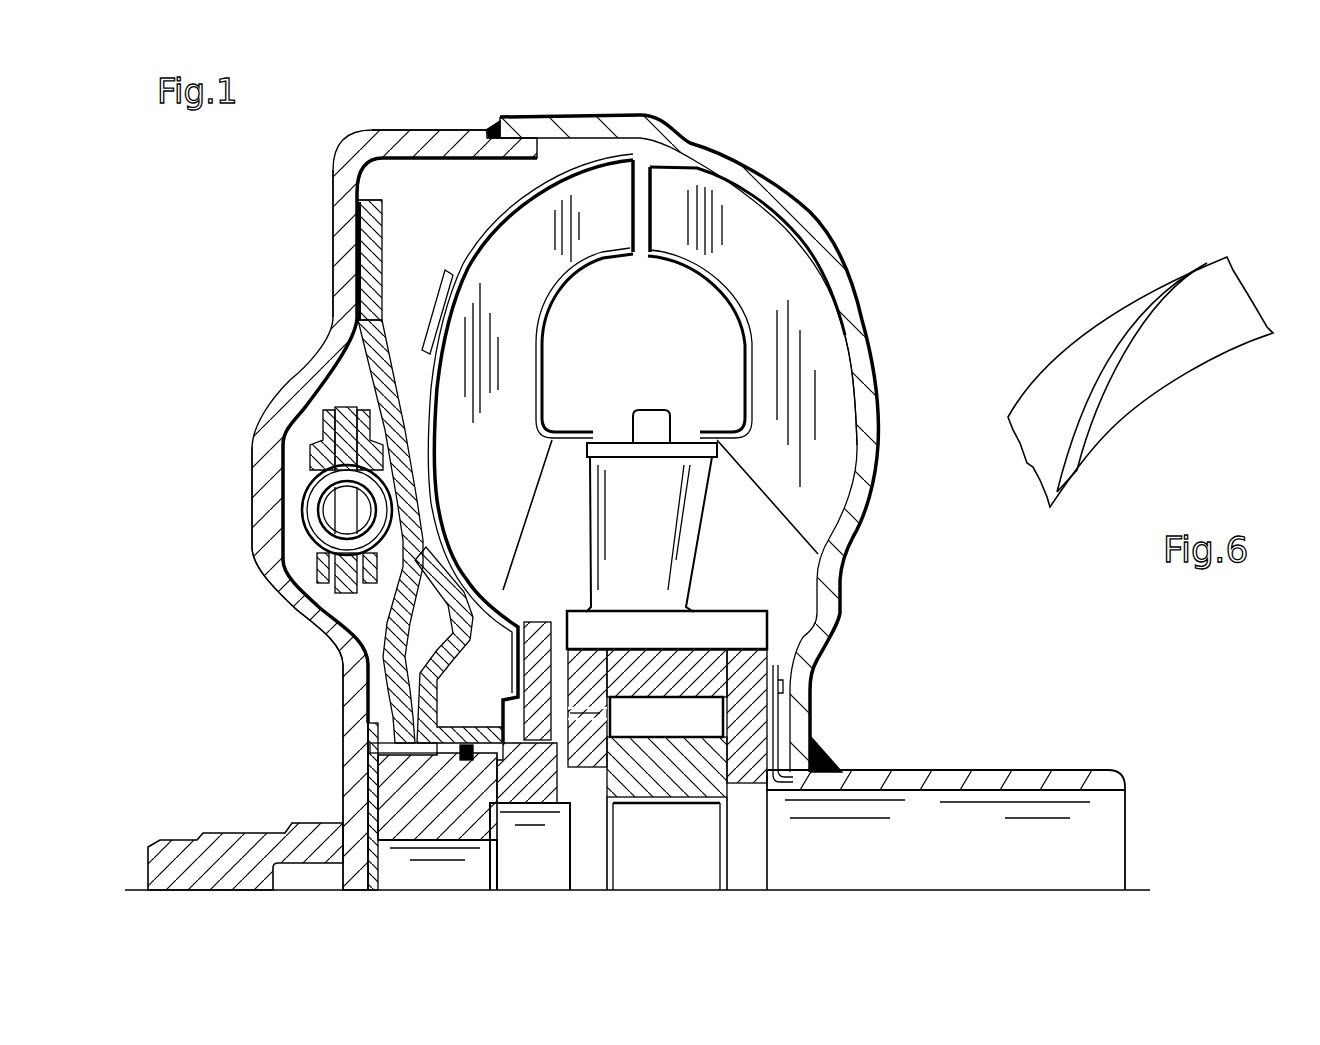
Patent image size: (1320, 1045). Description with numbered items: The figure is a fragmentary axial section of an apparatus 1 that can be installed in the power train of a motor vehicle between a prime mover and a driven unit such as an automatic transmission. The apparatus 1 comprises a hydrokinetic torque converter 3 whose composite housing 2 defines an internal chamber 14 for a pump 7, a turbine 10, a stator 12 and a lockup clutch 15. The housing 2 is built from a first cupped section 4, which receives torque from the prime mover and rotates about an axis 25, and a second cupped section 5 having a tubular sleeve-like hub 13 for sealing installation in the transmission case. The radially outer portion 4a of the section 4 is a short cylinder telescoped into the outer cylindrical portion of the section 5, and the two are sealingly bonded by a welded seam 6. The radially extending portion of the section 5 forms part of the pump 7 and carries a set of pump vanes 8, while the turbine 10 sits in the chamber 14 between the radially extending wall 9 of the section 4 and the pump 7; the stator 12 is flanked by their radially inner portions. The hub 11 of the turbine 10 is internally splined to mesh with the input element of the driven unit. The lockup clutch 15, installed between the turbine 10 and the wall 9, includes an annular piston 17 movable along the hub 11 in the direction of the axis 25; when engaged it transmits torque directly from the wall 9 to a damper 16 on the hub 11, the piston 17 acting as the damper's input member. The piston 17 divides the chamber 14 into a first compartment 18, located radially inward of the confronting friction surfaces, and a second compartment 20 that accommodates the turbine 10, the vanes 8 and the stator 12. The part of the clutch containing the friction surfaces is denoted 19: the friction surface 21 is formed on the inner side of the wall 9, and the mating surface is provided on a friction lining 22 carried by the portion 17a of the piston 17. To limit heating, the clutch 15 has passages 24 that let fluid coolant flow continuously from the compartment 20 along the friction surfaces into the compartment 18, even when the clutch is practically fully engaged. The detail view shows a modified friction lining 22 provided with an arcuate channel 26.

In FIG. 1, the apparatus 1 is at (867, 257).
In FIG. 1, the composite housing 2 is at (390, 147).
In FIG. 1, the hydrokinetic torque converter 3 is at (807, 207).
In FIG. 1, the first cupped section 4 is at (360, 776).
In FIG. 1, the radially outer portion 4a is at (430, 143).
In FIG. 1, the second cupped section 5 is at (860, 353).
In FIG. 1, the welded seam 6 is at (493, 127).
In FIG. 1, the pump 7 is at (840, 387).
In FIG. 1, the pump vanes 8 is at (838, 422).
In FIG. 1, the radially extending wall 9 is at (267, 570).
In FIG. 1, the turbine 10 is at (507, 473).
In FIG. 1, the hub 11 is at (460, 823).
In FIG. 1, the stator 12 is at (662, 562).
In FIG. 1, the tubular sleeve-like hub 13 is at (1013, 780).
In FIG. 1, the internal chamber 14 is at (602, 153).
In FIG. 1, the lockup clutch 15 is at (330, 207).
In FIG. 1, the damper 16 is at (317, 553).
In FIG. 1, the piston 17 is at (453, 617).
In FIG. 1, the piston portion 17a is at (353, 277).
In FIG. 1, the first compartment 18 is at (313, 418).
In FIG. 1, the clutch part 19 is at (348, 257).
In FIG. 1, the second compartment 20 is at (478, 203).
In FIG. 1, the friction surface 21 is at (350, 237).
In FIG. 1, the friction lining 22 is at (357, 303).
In FIG. 6, the friction lining 22 is at (1193, 338).
In FIG. 1, the passages 24 is at (350, 200).
In FIG. 1, the axis 25 is at (430, 873).
In FIG. 6, the arcuate channel 26 is at (1085, 418).